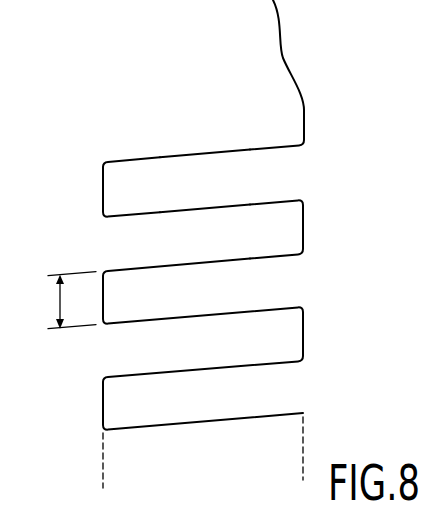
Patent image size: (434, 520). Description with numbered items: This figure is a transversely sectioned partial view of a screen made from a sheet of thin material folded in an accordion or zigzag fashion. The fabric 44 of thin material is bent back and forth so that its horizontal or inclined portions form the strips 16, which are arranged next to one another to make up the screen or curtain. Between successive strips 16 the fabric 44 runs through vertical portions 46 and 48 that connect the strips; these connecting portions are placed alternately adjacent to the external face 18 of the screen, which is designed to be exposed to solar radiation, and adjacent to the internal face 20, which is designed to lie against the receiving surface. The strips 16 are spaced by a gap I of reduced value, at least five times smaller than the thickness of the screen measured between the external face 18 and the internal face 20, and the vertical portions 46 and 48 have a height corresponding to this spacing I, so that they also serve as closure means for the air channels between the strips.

The fabric 44 is at (274, 50).
The vertical portion 46 is at (103, 190).
The vertical portion 48 is at (303, 227).
The strip 16 is at (178, 254).
The external face 18 is at (101, 464).
The internal face 20 is at (297, 455).
The gap I is at (48, 310).